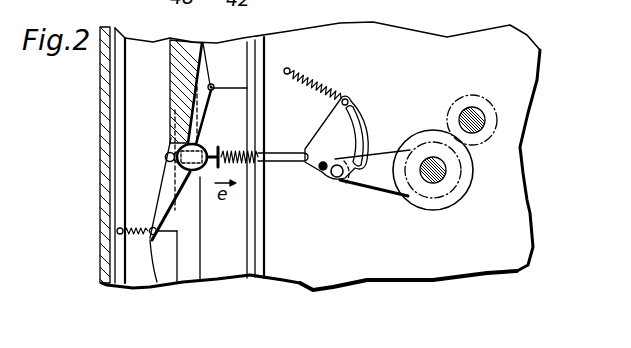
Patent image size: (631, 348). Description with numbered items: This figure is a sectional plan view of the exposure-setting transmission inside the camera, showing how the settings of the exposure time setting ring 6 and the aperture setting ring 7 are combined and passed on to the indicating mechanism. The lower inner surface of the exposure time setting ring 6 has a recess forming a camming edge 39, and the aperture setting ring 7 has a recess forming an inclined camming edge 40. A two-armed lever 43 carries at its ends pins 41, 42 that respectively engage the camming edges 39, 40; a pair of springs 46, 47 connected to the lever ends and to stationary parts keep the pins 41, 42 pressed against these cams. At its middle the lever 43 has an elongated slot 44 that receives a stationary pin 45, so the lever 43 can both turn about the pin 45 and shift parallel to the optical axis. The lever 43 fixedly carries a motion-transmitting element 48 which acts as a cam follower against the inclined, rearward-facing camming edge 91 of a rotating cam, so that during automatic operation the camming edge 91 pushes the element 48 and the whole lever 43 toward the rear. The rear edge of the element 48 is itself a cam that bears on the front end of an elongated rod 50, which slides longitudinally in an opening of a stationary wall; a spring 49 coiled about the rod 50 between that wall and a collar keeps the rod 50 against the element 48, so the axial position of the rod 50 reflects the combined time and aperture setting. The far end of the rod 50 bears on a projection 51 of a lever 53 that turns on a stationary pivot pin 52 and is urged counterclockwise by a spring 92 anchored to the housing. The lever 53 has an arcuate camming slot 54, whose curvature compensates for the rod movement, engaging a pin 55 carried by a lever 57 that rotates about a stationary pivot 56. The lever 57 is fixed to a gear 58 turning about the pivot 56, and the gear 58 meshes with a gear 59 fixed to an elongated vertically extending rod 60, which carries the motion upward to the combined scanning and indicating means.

The exposure time setting ring 6 is at (153, 48).
The aperture setting ring 7 is at (225, 281).
The camming edge 39 is at (163, 277).
The inclined camming edge 40 is at (207, 63).
The pin 41 is at (151, 234).
The pin 42 is at (214, 85).
The two-armed lever 43 is at (162, 200).
The elongated slot 44 is at (172, 162).
The stationary pin 45 is at (197, 177).
The spring 46 is at (118, 229).
The spring 47 is at (182, 42).
The motion-transmitting element 48 is at (178, 144).
The spring 49 is at (255, 150).
The elongated rod 50 is at (278, 162).
The projection 51 is at (307, 163).
The stationary pivot pin 52 is at (323, 171).
The lever 53 is at (328, 132).
The arcuate camming slot 54 is at (358, 125).
The pin 55 is at (338, 177).
The stationary pivot 56 is at (445, 175).
The lever 57 is at (383, 193).
The gear 58 is at (432, 130).
The gear 59 is at (485, 120).
The elongated vertically extending rod 60 is at (483, 123).
The camming edge 91 is at (183, 50).
The spring 92 is at (313, 83).